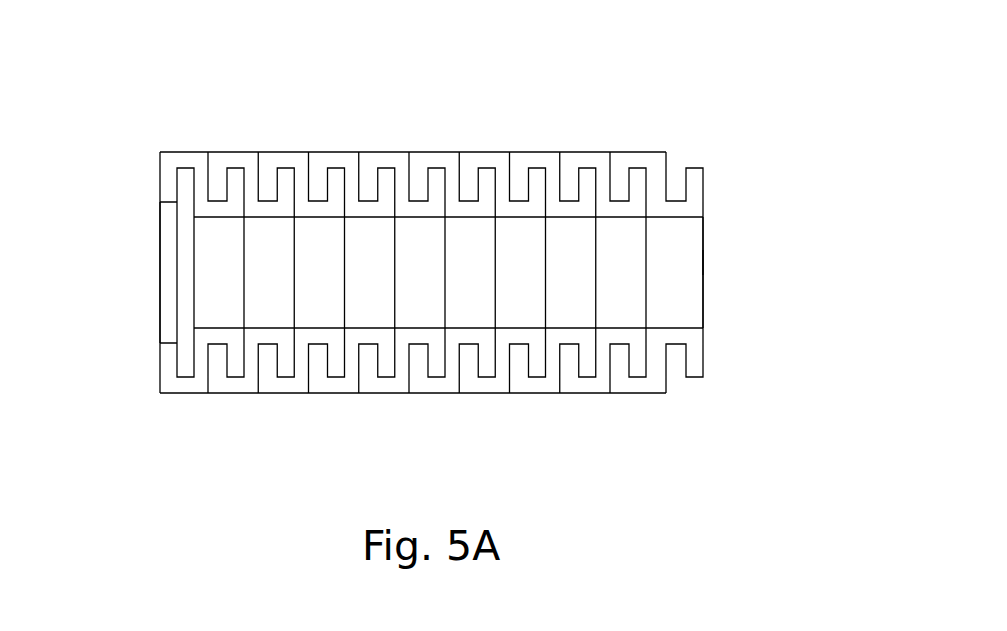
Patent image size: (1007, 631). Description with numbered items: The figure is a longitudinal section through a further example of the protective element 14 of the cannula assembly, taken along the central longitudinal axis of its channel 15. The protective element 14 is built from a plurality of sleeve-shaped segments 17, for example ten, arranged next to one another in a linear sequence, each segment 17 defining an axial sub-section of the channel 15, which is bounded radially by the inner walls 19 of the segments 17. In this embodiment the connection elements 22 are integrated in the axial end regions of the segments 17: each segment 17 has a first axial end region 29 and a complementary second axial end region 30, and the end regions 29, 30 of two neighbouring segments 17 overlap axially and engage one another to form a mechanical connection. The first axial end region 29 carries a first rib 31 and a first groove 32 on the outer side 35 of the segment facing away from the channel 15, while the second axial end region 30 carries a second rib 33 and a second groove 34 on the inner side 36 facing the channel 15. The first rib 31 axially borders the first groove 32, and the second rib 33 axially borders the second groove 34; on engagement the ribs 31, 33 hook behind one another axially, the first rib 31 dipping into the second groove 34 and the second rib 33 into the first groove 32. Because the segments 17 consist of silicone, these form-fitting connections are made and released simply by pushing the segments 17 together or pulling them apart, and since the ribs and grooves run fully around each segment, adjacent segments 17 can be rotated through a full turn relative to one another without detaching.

The protective element 14 is at (556, 78).
The channel 15 is at (727, 262).
The segments 17 is at (432, 133).
The inner walls 19 is at (692, 302).
The connection elements 22 is at (175, 150).
The first axial end region 29 is at (692, 205).
The second axial end region 30 is at (632, 160).
The first rib 31 is at (235, 180).
The first groove 32 is at (220, 198).
The second rib 33 is at (167, 222).
The second groove 34 is at (185, 265).
The outer side 35 is at (334, 160).
The inner side 36 is at (385, 380).